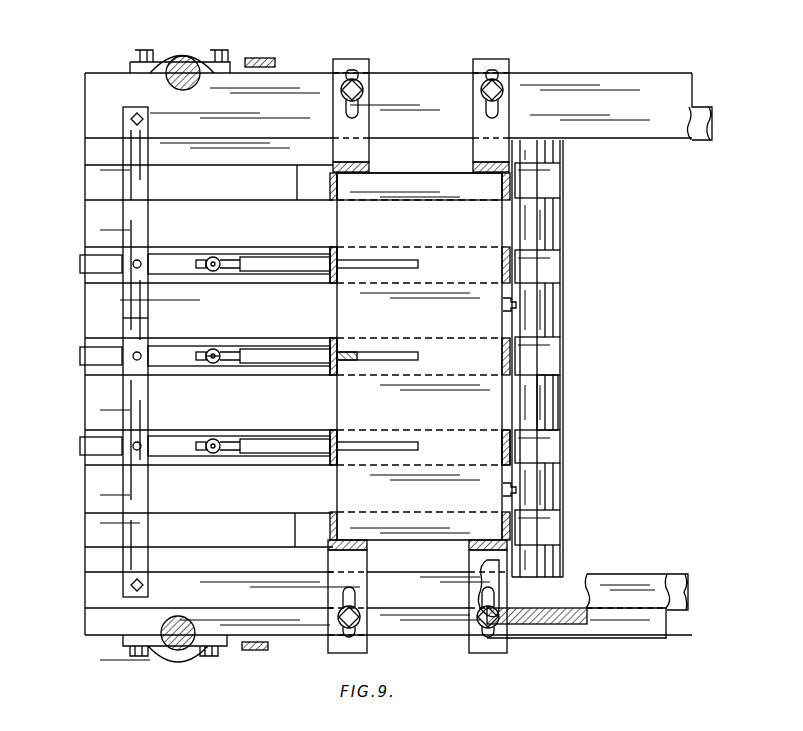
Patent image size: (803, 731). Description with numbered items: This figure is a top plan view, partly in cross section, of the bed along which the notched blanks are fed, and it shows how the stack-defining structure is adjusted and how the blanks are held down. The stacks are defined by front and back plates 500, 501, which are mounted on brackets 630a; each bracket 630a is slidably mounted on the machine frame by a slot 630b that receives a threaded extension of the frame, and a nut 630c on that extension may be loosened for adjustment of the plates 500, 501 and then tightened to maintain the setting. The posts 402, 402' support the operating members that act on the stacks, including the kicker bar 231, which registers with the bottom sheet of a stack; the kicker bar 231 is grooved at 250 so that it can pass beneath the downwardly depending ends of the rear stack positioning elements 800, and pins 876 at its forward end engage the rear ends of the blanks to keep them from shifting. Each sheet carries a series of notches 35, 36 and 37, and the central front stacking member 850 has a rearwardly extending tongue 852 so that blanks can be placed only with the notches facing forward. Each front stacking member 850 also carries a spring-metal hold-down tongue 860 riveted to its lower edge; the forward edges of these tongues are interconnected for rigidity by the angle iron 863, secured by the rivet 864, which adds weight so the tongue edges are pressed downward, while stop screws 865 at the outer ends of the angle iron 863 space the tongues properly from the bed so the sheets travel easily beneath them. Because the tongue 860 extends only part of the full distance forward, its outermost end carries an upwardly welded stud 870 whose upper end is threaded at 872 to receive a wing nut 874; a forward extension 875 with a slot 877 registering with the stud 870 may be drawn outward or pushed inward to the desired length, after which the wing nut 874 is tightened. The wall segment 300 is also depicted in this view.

The post 402 is at (202, 56).
The post 402' is at (195, 652).
The bracket 630a is at (363, 64).
The slot 630b is at (357, 112).
The nut 630c is at (361, 86).
The stop screw 865 is at (131, 119).
The angle iron 863 is at (122, 318).
The rivet 864 is at (137, 360).
The forward extension 875 is at (175, 243).
The wing nut 874 is at (228, 243).
The slot 877 is at (231, 271).
The hold-down tongue 860 is at (282, 272).
The stud 870 is at (207, 355).
The threaded upper end of stud 872 is at (214, 352).
The stack positioning element 800 is at (333, 252).
The front stacking member 850 is at (332, 372).
The tongue 852 is at (350, 362).
The notch 35 is at (398, 262).
The notch 36 is at (410, 352).
The notch 37 is at (400, 442).
The front plate 500 is at (512, 190).
The groove 250 is at (555, 266).
The kicker bar 231 is at (546, 410).
The pin 876 is at (508, 302).
The wall segment 300 is at (504, 440).
The back plate 501 is at (333, 182).